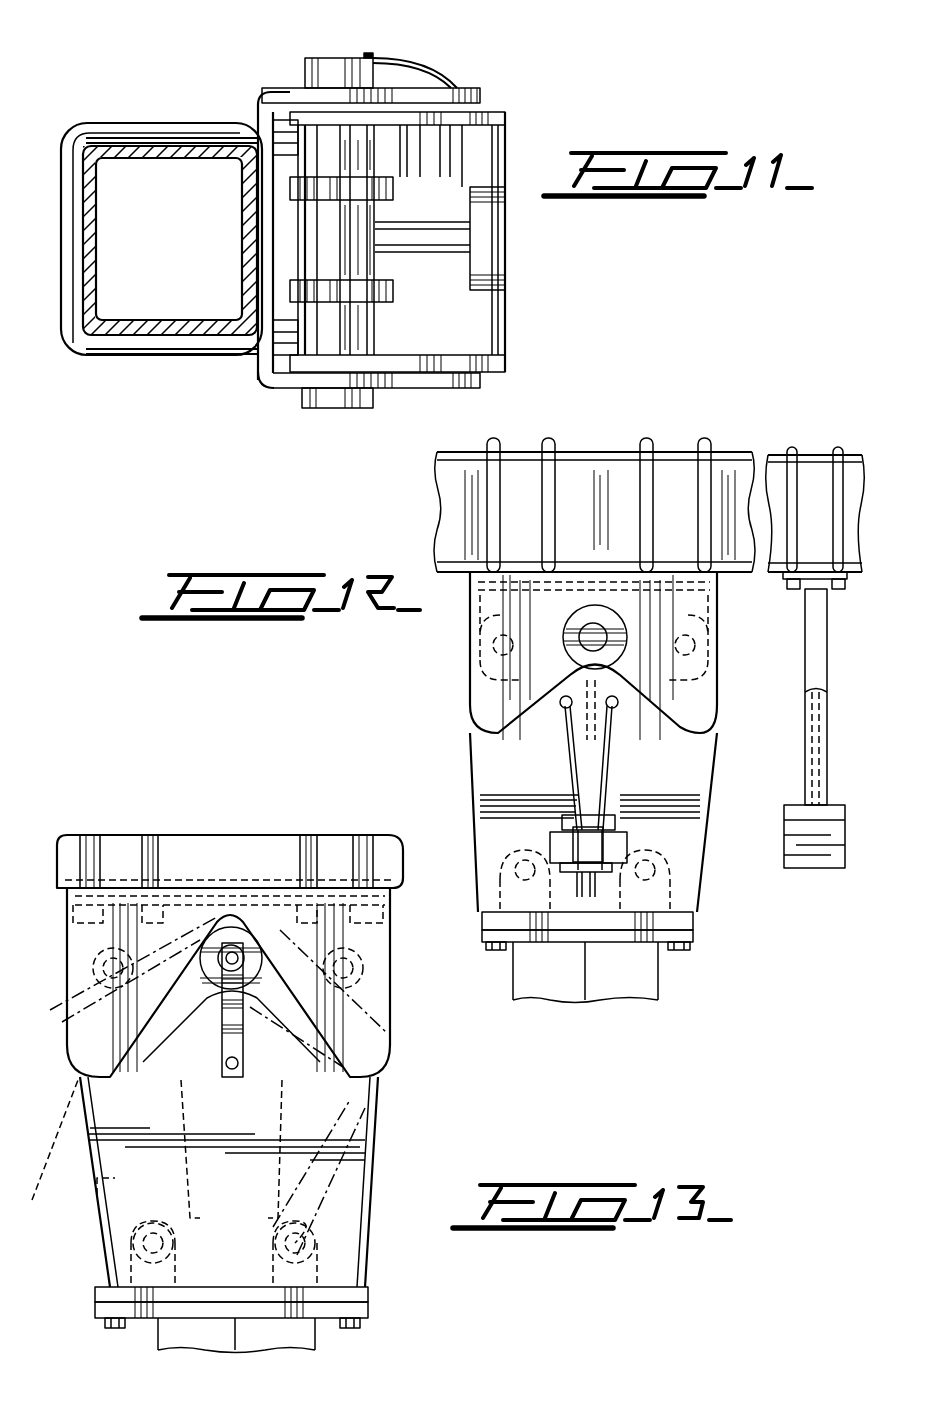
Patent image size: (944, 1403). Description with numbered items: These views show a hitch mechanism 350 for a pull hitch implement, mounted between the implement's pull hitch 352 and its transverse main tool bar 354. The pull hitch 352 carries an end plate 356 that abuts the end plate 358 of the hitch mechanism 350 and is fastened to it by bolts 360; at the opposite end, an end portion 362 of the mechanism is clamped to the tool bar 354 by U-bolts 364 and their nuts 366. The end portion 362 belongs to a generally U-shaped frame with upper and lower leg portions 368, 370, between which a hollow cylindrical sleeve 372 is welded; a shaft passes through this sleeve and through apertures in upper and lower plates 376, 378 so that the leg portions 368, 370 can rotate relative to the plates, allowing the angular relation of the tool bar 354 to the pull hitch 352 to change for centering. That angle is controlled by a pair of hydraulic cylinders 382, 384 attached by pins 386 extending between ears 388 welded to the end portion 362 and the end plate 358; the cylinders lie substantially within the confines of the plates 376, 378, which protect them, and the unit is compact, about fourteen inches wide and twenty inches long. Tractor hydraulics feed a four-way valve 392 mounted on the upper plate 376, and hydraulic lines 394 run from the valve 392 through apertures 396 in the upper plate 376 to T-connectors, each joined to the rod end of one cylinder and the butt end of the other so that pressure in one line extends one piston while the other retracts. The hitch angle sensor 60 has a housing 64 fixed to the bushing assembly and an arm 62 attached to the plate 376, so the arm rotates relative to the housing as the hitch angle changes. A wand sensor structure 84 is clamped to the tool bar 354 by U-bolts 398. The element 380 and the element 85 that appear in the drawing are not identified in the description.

In FIG. 11, the hitch mechanism 350 is at (325, 430).
In FIG. 12, the hitch mechanism 350 is at (462, 742).
In FIG. 13, the hitch mechanism 350 is at (398, 1096).
In FIG. 12, the pull hitch 352 is at (660, 1002).
In FIG. 13, the pull hitch 352 is at (318, 1342).
In FIG. 11, the main tool bar 354 is at (163, 340).
In FIG. 12, the main tool bar 354 is at (600, 452).
In FIG. 13, the main tool bar 354 is at (225, 838).
In FIG. 12, the end plate 356 is at (695, 938).
In FIG. 13, the end plate 356 is at (370, 1310).
In FIG. 12, the end plate 358 is at (695, 922).
In FIG. 13, the end plate 358 is at (370, 1293).
In FIG. 12, the bolts 360 is at (492, 951).
In FIG. 13, the bolts 360 is at (118, 1330).
In FIG. 11, the end portion 362 is at (233, 337).
In FIG. 12, the end portion 362 is at (472, 590).
In FIG. 11, the U-bolts 364 is at (118, 355).
In FIG. 12, the U-bolts 364 is at (548, 440).
In FIG. 13, the U-bolts 364 is at (148, 835).
In FIG. 11, the nuts 366 is at (262, 96).
In FIG. 13, the nuts 366 is at (78, 926).
In FIG. 11, the upper leg portion 368 is at (482, 94).
In FIG. 12, the upper leg portion 368 is at (716, 735).
In FIG. 13, the upper leg portion 368 is at (385, 1010).
In FIG. 11, the lower leg portion 370 is at (425, 389).
In FIG. 11, the hollow cylindrical sleeve 372 is at (380, 318).
In FIG. 12, the hollow cylindrical sleeve 372 is at (566, 657).
In FIG. 13, the hollow cylindrical sleeve 372 is at (256, 988).
In FIG. 11, the upper plate 376 is at (506, 118).
In FIG. 12, the upper plate 376 is at (705, 782).
In FIG. 13, the upper plate 376 is at (342, 1270).
In FIG. 11, the lower plate 378 is at (500, 354).
In FIG. 11, the housing body 380 is at (488, 164).
In FIG. 12, the housing body 380 is at (598, 745).
In FIG. 13, the hydraulic cylinder 382 is at (370, 1147).
In FIG. 11, the hydraulic cylinder 384 is at (505, 250).
In FIG. 13, the hydraulic cylinder 384 is at (92, 1178).
In FIG. 12, the pins 386 is at (516, 870).
In FIG. 13, the pins 386 is at (95, 970).
In FIG. 11, the ears 388 is at (393, 192).
In FIG. 12, the ears 388 is at (492, 655).
In FIG. 13, the ears 388 is at (312, 1232).
In FIG. 12, the 4-way valve 392 is at (617, 822).
In FIG. 12, the hydraulic lines 394 is at (615, 806).
In FIG. 12, the apertures 396 is at (560, 708).
In FIG. 12, the U-bolts 398 is at (841, 447).
In FIG. 11, the sensor 60 is at (346, 48).
In FIG. 13, the sensor 60 is at (207, 1018).
In FIG. 11, the arm 62 is at (438, 62).
In FIG. 13, the arm 62 is at (224, 1077).
In FIG. 11, the housing 64 is at (310, 62).
In FIG. 13, the housing 64 is at (212, 974).
In FIG. 12, the wand sensor structure 84 is at (830, 690).
In FIG. 12, the block 85 is at (846, 835).